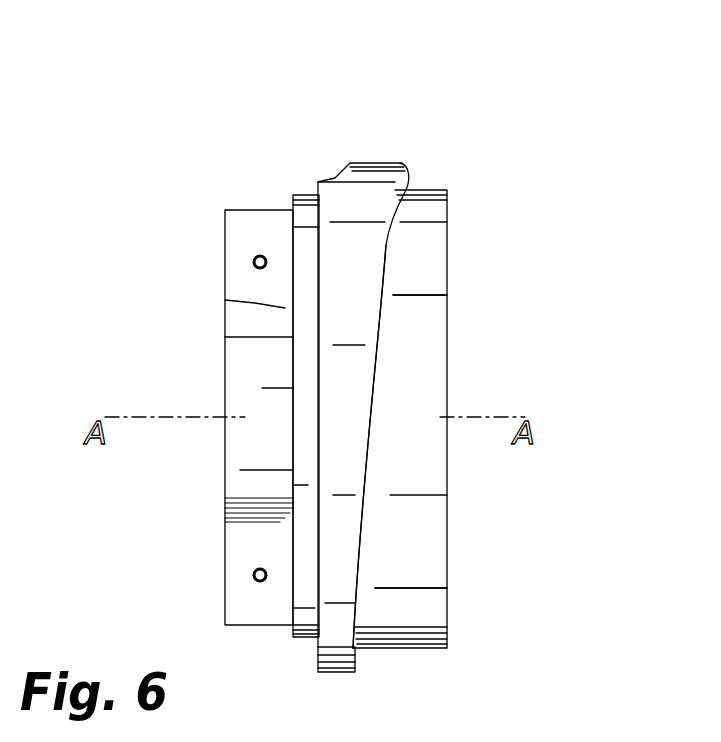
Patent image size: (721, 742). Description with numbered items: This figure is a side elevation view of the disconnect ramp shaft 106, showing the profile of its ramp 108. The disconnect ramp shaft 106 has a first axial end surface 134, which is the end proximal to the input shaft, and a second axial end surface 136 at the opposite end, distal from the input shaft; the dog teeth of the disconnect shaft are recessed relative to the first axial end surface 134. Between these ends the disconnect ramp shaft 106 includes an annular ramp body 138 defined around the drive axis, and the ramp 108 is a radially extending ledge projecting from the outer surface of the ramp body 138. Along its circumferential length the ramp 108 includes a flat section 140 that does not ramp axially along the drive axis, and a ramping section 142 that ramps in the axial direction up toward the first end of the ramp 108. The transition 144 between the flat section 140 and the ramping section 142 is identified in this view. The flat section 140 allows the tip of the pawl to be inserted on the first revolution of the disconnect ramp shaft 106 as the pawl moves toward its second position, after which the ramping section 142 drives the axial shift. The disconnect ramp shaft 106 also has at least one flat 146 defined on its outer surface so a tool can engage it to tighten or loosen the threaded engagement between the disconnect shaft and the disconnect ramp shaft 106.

The disconnect ramp shaft 106 is at (530, 128).
The ramp 108 is at (408, 180).
The first axial end surface 134 is at (452, 228).
The second axial end surface 136 is at (225, 510).
The annular ramp body 138 is at (410, 530).
The flat section 140 is at (360, 565).
The ramping section 142 is at (382, 279).
The transition 144 is at (366, 399).
The flat 146 is at (232, 358).